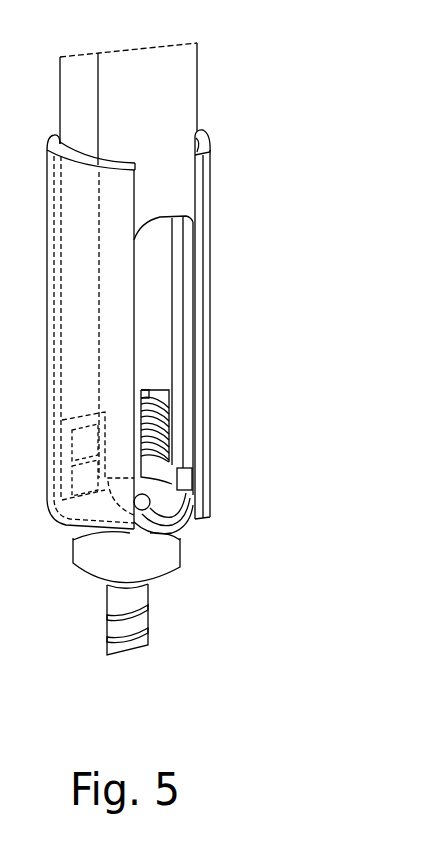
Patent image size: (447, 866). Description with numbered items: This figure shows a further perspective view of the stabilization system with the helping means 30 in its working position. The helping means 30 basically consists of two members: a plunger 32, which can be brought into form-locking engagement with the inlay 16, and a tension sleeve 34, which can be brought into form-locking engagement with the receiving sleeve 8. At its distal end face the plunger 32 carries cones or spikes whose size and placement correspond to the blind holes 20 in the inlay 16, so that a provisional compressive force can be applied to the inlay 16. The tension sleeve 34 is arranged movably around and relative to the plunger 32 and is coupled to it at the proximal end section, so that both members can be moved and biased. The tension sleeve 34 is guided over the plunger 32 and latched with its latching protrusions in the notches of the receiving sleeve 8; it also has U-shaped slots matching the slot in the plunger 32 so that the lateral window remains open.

The receiving sleeve 8 is at (140, 607).
The inlay 16 is at (178, 510).
The blind holes 20 is at (190, 492).
The helping means 30 is at (214, 351).
The plunger 32 is at (187, 65).
The tension sleeve 34 is at (208, 153).